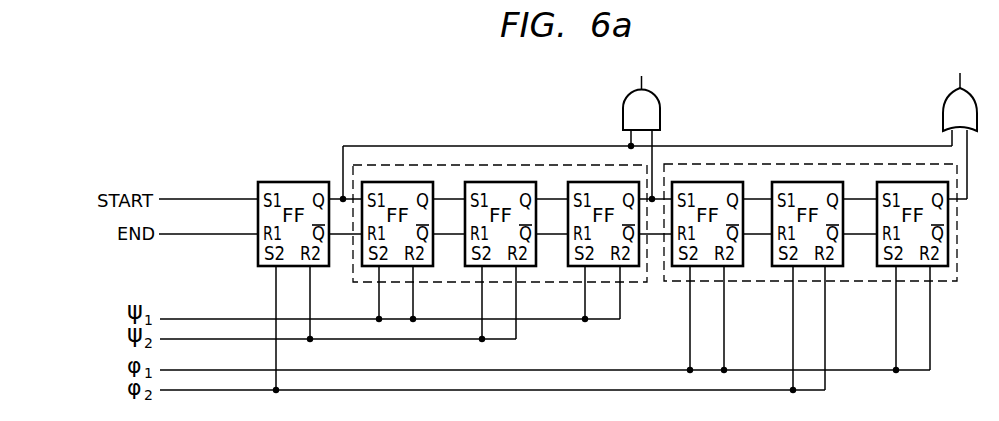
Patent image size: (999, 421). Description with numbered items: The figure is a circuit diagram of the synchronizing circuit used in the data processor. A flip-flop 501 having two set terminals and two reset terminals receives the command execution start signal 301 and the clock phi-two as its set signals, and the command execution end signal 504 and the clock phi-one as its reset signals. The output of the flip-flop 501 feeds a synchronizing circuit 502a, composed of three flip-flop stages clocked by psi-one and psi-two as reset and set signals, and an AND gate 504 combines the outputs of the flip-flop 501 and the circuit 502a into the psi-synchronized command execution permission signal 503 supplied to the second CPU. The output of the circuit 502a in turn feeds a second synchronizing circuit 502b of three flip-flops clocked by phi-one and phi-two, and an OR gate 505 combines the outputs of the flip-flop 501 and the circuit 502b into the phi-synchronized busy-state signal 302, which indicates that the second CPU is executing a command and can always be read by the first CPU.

The command execution start signal 301 is at (206, 198).
The busy-state signal 302 is at (958, 80).
The flip-flop 501 is at (292, 181).
The synchronizing circuit 502a is at (568, 282).
The synchronizing circuit 502b is at (775, 282).
The command execution permission signal 503 is at (644, 82).
The AND gate 504 is at (210, 236).
The OR gate 505 is at (943, 118).